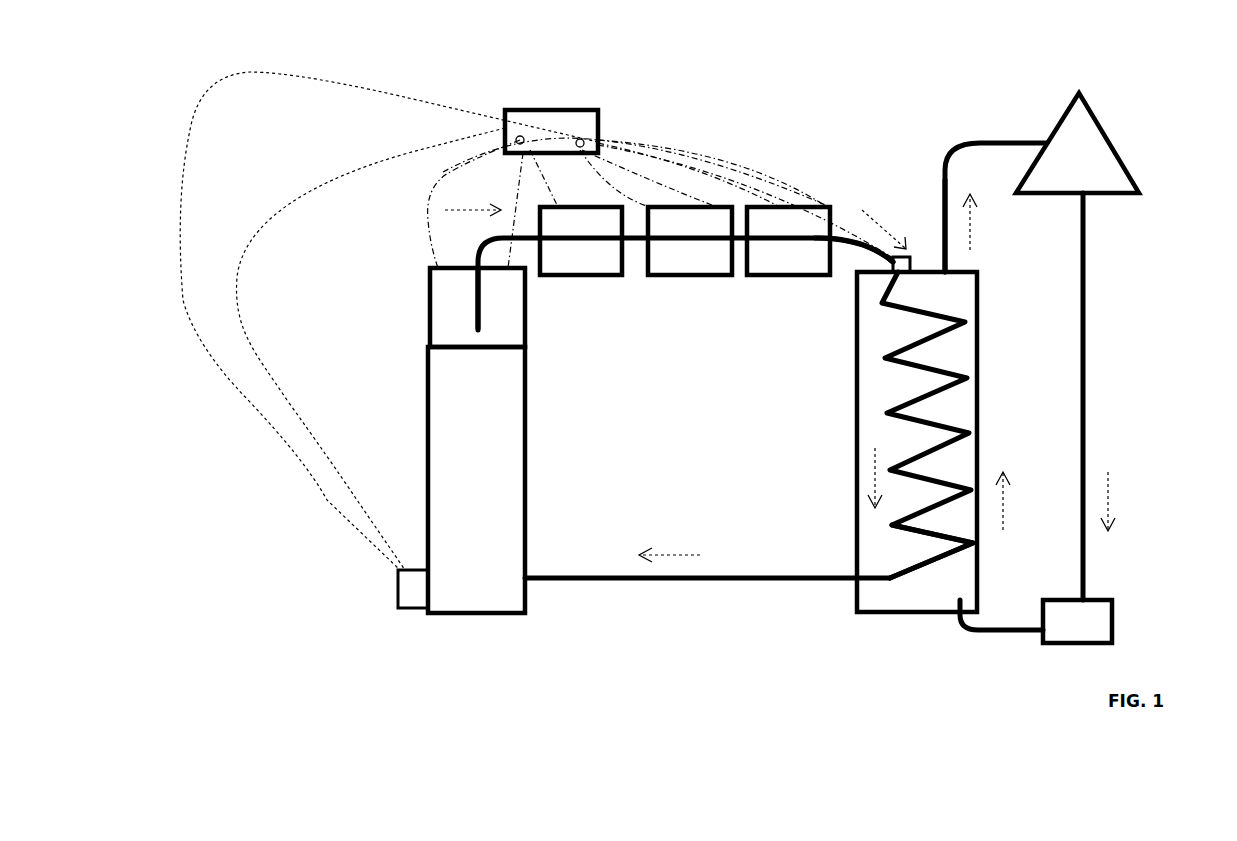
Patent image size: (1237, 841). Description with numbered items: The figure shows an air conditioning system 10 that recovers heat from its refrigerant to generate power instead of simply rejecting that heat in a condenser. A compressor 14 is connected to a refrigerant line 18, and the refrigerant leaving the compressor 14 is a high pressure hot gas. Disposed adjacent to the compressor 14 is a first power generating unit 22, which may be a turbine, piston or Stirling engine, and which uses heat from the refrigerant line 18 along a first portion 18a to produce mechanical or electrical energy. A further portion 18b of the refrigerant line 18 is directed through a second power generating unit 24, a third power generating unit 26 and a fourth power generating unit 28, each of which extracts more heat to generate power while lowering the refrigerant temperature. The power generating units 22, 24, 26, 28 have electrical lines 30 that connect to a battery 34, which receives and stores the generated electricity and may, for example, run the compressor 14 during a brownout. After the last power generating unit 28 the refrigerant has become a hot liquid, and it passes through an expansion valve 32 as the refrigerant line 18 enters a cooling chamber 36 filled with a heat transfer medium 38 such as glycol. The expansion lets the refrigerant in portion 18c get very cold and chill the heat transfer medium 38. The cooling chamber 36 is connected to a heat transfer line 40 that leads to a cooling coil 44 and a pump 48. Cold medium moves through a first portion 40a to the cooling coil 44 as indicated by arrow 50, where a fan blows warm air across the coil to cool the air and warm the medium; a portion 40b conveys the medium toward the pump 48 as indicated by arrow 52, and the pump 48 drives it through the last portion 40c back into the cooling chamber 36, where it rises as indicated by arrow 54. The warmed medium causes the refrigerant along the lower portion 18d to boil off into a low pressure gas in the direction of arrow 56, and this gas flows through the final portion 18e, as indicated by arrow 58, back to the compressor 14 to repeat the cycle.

The air conditioning system 10 is at (878, 138).
The compressor 14 is at (450, 470).
The refrigerant line 18 is at (482, 322).
The first portion of refrigerant line 18a is at (480, 300).
The portion of refrigerant line 18b is at (835, 225).
The portion of refrigerant line 18c is at (880, 285).
The lower portion of refrigerant line 18d is at (885, 520).
The final portion of refrigerant line 18e is at (658, 582).
The first power generating unit 22 is at (440, 295).
The second power generating unit 24 is at (597, 275).
The third power generating unit 26 is at (683, 275).
The fourth power generating unit 28 is at (777, 275).
The electrical lines 30 is at (643, 185).
The expansion valve 32 is at (893, 262).
The battery 34 is at (552, 108).
The cooling chamber 36 is at (300, 190).
The heat transfer medium 38 is at (852, 375).
The heat transfer line 40 is at (985, 140).
The first portion of heat transfer line 40a is at (943, 205).
The portion of heat transfer line 40b is at (1085, 300).
The last portion of heat transfer line 40c is at (1005, 633).
The cooling coil 44 is at (1110, 150).
The pump 48 is at (1098, 615).
The arrow 50 is at (985, 232).
The arrow 52 is at (1112, 490).
The arrow 54 is at (1005, 512).
The arrow 56 is at (878, 465).
The arrow 58 is at (668, 542).